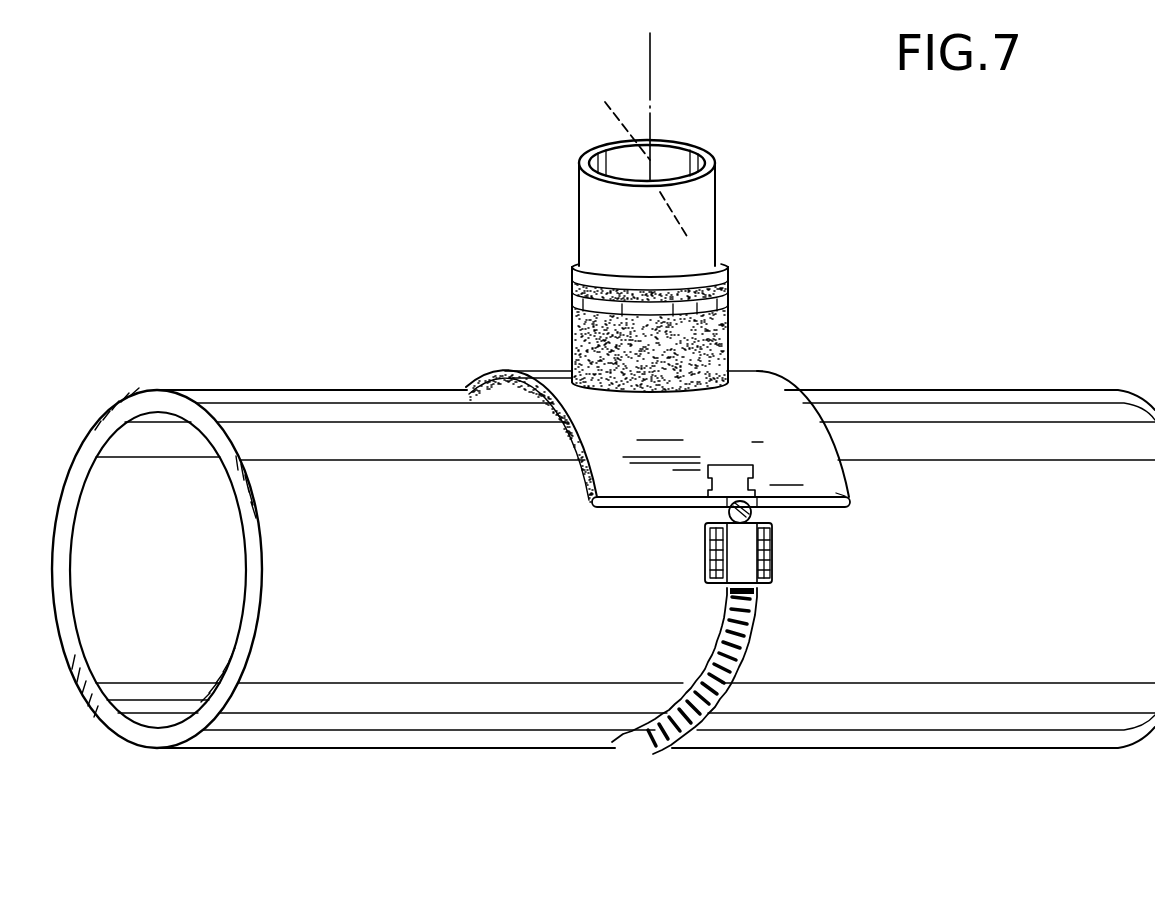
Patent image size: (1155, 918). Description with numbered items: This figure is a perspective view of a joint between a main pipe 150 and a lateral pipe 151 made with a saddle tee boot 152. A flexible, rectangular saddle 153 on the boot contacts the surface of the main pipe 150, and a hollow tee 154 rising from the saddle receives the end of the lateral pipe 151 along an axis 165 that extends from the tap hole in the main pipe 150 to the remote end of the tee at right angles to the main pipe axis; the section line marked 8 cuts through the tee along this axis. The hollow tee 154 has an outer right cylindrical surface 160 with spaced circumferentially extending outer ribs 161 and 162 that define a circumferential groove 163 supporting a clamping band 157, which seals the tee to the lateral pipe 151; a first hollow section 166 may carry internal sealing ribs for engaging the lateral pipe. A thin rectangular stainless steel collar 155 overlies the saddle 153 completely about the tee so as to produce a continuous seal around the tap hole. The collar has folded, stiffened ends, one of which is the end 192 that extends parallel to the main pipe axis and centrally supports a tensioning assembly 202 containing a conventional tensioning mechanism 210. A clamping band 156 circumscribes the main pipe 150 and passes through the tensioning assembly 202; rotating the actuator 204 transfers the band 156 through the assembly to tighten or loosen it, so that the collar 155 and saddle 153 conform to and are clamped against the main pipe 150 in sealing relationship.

The main pipe 150 is at (284, 390).
The lateral pipe 151 is at (715, 177).
The saddle tee boot 152 is at (666, 212).
The saddle 153 is at (466, 386).
The hollow tee 154 is at (724, 357).
The collar 155 is at (530, 373).
The clamping band 156 is at (734, 609).
The clamping band 157 is at (728, 278).
The outer right cylindrical surface 160 is at (571, 327).
The outer rib 161 is at (572, 262).
The outer rib 162 is at (571, 300).
The circumferential groove 163 is at (728, 303).
The axis 165 is at (650, 55).
The first hollow section 166 is at (722, 253).
The end of the collar 192 is at (836, 493).
The tensioning assembly 202 is at (772, 554).
The actuator 204 is at (720, 503).
The tensioning mechanism 210 is at (705, 565).
The section line 8- 8 is at (688, 238).